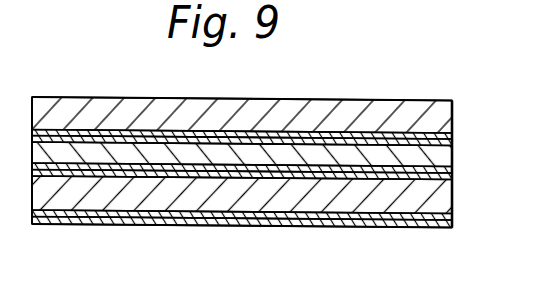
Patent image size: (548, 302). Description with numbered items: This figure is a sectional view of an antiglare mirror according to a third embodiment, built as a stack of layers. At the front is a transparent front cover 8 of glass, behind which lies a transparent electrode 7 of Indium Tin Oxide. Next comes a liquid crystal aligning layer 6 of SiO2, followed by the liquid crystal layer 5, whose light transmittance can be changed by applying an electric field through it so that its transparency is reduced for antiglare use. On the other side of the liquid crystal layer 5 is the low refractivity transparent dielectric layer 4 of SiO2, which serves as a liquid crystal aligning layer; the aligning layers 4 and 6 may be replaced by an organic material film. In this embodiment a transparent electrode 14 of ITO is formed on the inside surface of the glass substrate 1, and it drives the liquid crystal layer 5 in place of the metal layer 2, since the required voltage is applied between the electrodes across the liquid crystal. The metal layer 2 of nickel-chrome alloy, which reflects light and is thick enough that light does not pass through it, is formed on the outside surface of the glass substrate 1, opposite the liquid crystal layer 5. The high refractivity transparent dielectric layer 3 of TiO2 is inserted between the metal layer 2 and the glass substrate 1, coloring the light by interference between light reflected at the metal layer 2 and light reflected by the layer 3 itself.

The transparent front cover 8 is at (444, 107).
The transparent electrode 7 is at (456, 138).
The liquid crystal aligning layer 6 is at (455, 148).
The liquid crystal layer 5 is at (454, 161).
The low refractivity transparent dielectric layer 4 is at (454, 175).
The transparent electrode 14 is at (455, 180).
The glass substrate 1 is at (456, 218).
The high refractivity transparent dielectric layer 3 is at (458, 226).
The metal layer 2 is at (433, 232).